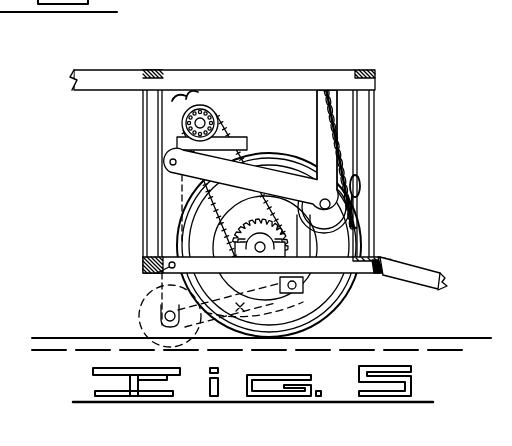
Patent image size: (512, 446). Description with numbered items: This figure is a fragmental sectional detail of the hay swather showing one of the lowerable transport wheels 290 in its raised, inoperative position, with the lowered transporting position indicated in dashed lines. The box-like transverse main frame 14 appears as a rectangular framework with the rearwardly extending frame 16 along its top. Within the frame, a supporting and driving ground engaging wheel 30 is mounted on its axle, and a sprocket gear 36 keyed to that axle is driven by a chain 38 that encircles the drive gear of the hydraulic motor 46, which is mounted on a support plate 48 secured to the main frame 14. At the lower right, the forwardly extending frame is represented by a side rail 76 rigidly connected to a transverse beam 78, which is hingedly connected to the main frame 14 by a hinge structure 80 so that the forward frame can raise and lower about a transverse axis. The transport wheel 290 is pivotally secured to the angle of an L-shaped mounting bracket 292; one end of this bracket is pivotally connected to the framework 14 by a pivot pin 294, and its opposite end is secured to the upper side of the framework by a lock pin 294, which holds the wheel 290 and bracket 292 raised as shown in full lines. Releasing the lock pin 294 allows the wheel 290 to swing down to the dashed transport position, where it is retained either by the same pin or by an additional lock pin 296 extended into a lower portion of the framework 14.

The main frame 14 is at (138, 184).
The rearwardly extending frame 16 is at (110, 67).
The ground engaging wheel 30 is at (318, 300).
The sprocket gear 36 is at (237, 232).
The chain 38 is at (200, 196).
The hydraulic motor 46 is at (212, 113).
The support plate 48 is at (222, 156).
The side rail 76 is at (422, 273).
The transverse beam 78 is at (393, 258).
The hinge structure 80 is at (380, 276).
The transport wheel 290 is at (148, 315).
The L-shaped mounting bracket 292 is at (316, 113).
The pivot pin / lock pin 294 is at (326, 74).
The lock pin 296 is at (152, 274).